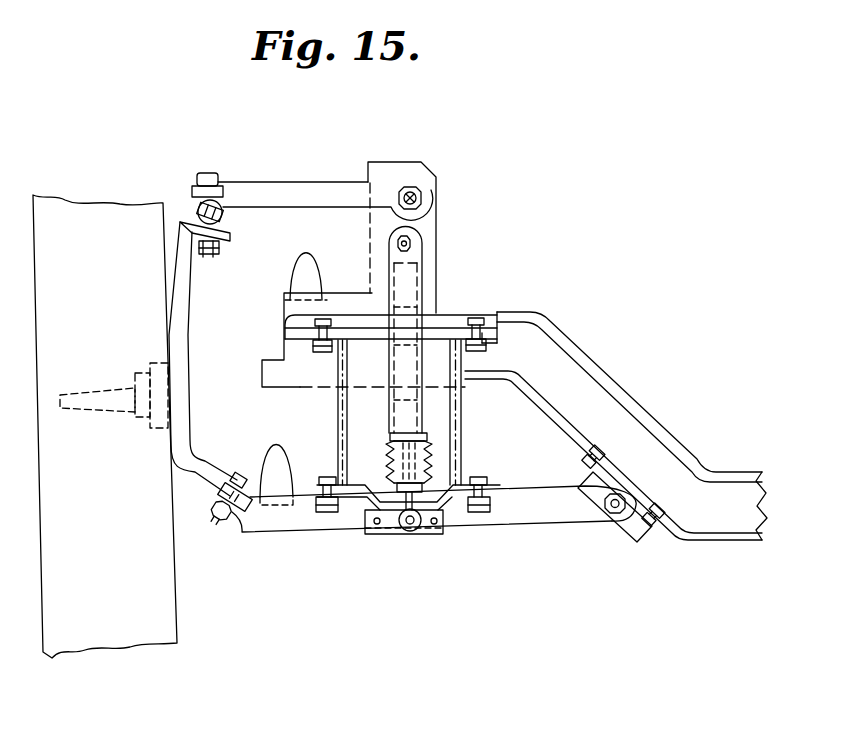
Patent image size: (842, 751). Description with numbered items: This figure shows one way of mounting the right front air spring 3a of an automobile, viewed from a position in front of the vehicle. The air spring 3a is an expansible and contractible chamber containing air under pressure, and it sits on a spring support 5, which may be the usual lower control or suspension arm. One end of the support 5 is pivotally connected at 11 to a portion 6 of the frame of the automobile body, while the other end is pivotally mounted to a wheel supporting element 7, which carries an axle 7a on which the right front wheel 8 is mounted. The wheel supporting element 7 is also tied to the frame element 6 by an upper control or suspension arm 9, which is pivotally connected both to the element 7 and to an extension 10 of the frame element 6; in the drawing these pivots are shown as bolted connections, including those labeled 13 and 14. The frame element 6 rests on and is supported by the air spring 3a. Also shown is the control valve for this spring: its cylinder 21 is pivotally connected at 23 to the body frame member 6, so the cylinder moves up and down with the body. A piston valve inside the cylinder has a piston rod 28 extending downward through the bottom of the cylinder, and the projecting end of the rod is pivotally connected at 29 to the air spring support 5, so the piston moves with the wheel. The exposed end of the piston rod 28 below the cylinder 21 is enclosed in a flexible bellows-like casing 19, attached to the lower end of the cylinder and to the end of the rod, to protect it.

The right front air spring 3a is at (337, 396).
The spring support 5 is at (275, 522).
The frame element 6 is at (560, 360).
The wheel supporting element 7 is at (183, 313).
The axle 7a is at (123, 415).
The right front wheel 8 is at (108, 623).
The upper control or suspension arm 9 is at (328, 184).
The extension of the frame element 10 is at (431, 219).
The pivotal connection 11 is at (610, 521).
The clamping bolt 13 is at (195, 212).
The pivot bolt 14 is at (420, 195).
The flexible bellows-like casing 19 is at (433, 458).
The cylinder 21 is at (422, 305).
The pivotal connection of cylinder 23 is at (410, 245).
The piston rod 28 is at (385, 461).
The pivotal connection of piston rod 29 is at (405, 529).